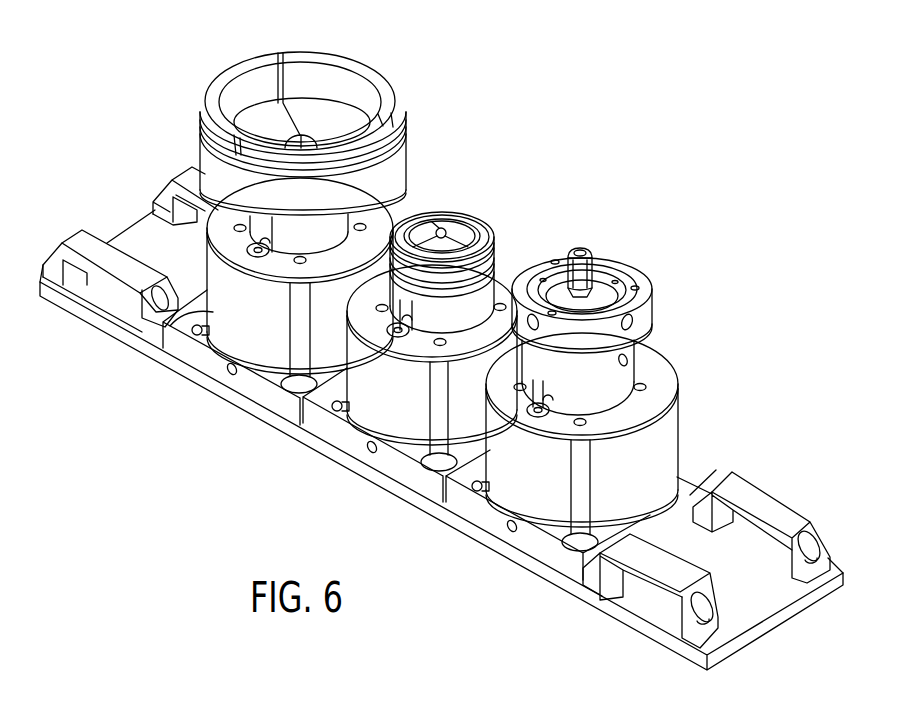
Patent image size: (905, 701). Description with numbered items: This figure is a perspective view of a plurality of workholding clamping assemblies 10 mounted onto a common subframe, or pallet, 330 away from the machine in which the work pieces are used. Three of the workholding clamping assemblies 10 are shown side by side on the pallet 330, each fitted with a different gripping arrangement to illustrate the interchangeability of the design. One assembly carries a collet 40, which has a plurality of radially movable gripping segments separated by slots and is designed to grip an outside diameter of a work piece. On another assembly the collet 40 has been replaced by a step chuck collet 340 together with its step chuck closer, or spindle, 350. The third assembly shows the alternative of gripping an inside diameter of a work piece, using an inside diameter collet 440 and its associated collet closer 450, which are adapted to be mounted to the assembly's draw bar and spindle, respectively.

The workholding clamping assembly 10 is at (238, 328).
The collet 40 is at (453, 228).
The common subframe (or pallet) 330 is at (762, 502).
The step chuck collet 340 is at (340, 62).
The step chuck closer/spindle 350 is at (395, 158).
The inside diameter collet 440 is at (578, 244).
The collet closer 450 is at (643, 341).